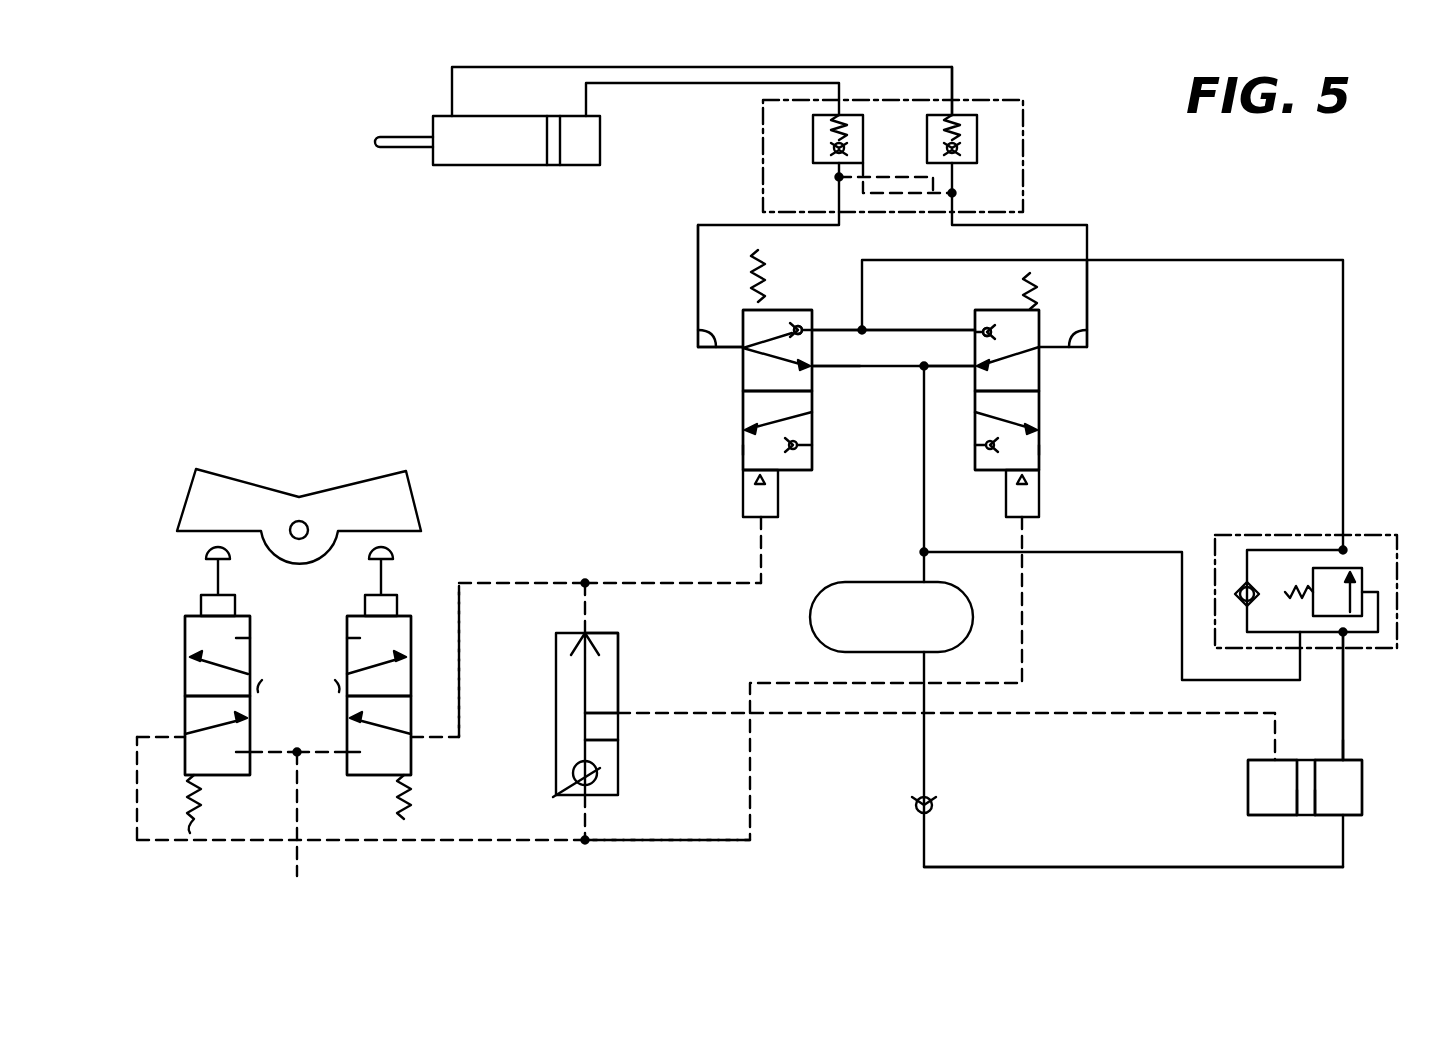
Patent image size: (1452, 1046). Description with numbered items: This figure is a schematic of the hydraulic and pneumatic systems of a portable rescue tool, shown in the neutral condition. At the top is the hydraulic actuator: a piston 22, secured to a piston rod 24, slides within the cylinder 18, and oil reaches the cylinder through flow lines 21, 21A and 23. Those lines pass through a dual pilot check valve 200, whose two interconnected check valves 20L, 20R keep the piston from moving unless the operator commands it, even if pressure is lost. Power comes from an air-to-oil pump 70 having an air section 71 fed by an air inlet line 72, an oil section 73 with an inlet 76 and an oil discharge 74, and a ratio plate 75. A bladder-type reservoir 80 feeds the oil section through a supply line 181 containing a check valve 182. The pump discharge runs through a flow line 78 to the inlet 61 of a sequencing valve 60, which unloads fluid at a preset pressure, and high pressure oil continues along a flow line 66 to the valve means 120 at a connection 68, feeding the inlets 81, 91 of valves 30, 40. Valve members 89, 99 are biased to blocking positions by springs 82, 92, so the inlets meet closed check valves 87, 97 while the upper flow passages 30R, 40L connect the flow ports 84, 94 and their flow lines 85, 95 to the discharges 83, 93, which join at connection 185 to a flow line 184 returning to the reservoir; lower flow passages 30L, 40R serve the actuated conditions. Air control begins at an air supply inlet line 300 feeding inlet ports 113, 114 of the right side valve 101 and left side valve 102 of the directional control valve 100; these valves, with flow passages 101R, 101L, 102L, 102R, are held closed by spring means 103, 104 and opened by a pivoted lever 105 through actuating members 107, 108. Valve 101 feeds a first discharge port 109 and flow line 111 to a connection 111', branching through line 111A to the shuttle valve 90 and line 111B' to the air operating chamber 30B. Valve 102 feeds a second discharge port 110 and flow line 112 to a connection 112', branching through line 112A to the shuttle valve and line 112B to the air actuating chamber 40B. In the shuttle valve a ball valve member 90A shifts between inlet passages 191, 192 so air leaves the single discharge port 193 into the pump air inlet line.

The cylinder 18 is at (580, 147).
The flow line 21 is at (452, 96).
The flow line 21A is at (920, 65).
The piston 22 is at (550, 166).
The flow line 23 is at (668, 90).
The piston rod 24 is at (390, 138).
The dual pilot check valve 200 is at (1033, 118).
The check valve 20L is at (813, 150).
The check valve 20R is at (977, 152).
The flow line 66 is at (1245, 260).
The connection 68 is at (862, 328).
The inlet 81 is at (833, 328).
The spring 82 is at (760, 242).
The discharge 83 is at (832, 368).
The flow port 84 is at (698, 330).
The flow line 85 is at (698, 290).
The check valve 87 is at (792, 323).
The valve member 89 is at (743, 452).
The inlet 91 is at (921, 302).
The spring 92 is at (1040, 290).
The discharge 93 is at (950, 370).
The flow port 94 is at (1089, 332).
The flow line 95 is at (1089, 302).
The check valve 97 is at (988, 325).
The valve member 99 is at (1040, 455).
The air-actuated three-way valve means 120 is at (688, 363).
The connection 185 is at (924, 366).
The flow line 184 is at (924, 512).
The valve 30 is at (730, 411).
The flow passage 30R is at (740, 358).
The flow passage 30L is at (804, 414).
The air operating chamber 30B is at (744, 505).
The valve 40 is at (1060, 408).
The flow passage 40L is at (1028, 350).
The flow passage 40R is at (1010, 418).
The air actuating chamber 40B is at (1025, 495).
The reservoir 80 is at (850, 553).
The supply line 181 is at (934, 805).
The check valve 182 is at (1048, 866).
The sequencing valve 60 is at (1371, 533).
The inlet 61 is at (1346, 634).
The flow line 78 is at (1345, 718).
The oil discharge 74 is at (1345, 752).
The pump 70 is at (1353, 830).
The air section 71 is at (1266, 782).
The oil section 73 is at (1350, 790).
The ratio plate 75 is at (1303, 800).
The inlet 76 is at (1335, 817).
The air inlet line 72 is at (1060, 717).
The pneumatic directional control valve 100 is at (378, 418).
The pivoted lever 105 is at (243, 483).
The left side valve 102 is at (188, 616).
The actuating member 108 is at (205, 558).
The flow passage 102L is at (207, 655).
The flow passage 102R is at (194, 726).
The second discharge port 110 is at (165, 731).
The spring means 104 is at (190, 825).
The flow line 112 is at (428, 817).
The right side valve 101 is at (400, 616).
The actuating member 107 is at (392, 556).
The flow passage 101R is at (352, 669).
The flow passage 101L is at (360, 695).
The first discharge port 109 is at (405, 715).
The spring means 103 is at (410, 800).
The inlet port 114 is at (272, 755).
The inlet port 113 is at (318, 755).
The air supply inlet line 300 is at (310, 860).
The shuttle valve 90 is at (554, 698).
The inlet passage 191 is at (590, 680).
The discharge port 193 is at (605, 713).
The inlet passage 192 is at (590, 740).
The ball valve member 90A is at (556, 795).
The flow line 111 is at (505, 661).
The line 111A is at (588, 618).
The connection 111' is at (534, 558).
The line 111B' is at (673, 562).
The line 112A is at (588, 815).
The connection 112' is at (552, 861).
The line 112B is at (700, 842).